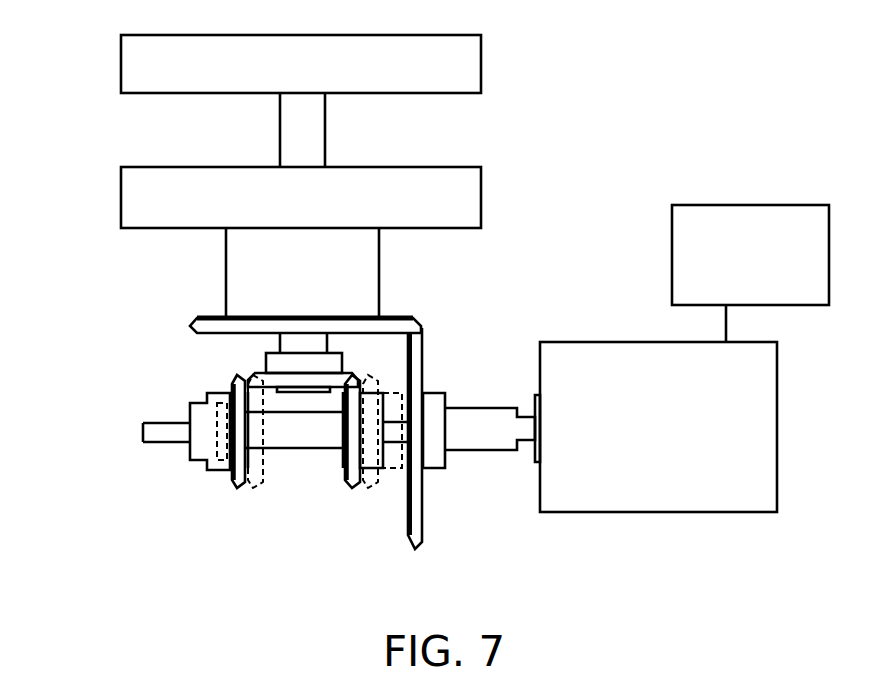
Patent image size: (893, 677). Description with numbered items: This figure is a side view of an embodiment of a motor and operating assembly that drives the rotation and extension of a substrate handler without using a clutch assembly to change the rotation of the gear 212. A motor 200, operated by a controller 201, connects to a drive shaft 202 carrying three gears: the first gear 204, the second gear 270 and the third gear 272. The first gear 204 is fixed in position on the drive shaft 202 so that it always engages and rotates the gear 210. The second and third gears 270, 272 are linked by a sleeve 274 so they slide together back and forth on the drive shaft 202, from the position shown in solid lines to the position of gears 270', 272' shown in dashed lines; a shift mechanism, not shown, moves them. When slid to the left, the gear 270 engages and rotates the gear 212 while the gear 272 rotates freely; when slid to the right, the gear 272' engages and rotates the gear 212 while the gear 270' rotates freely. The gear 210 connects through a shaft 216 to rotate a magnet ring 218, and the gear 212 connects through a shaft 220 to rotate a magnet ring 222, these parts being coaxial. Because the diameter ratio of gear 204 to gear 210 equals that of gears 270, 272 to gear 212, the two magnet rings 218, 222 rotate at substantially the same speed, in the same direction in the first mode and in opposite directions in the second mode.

The motor 200 is at (633, 512).
The controller 201 is at (672, 257).
The drive shaft 202 is at (162, 442).
The first gear 204 is at (417, 550).
The gear 210 is at (207, 318).
The gear 212 is at (257, 367).
The shaft 216 is at (379, 283).
The magnet ring 218 is at (481, 200).
The shaft 220 is at (280, 146).
The magnet ring 222 is at (121, 73).
The second gear 270 is at (325, 482).
The second gear in shifted position 270' is at (373, 473).
The third gear 272 is at (193, 462).
The third gear in shifted position 272' is at (244, 476).
The sleeve 274 is at (318, 450).